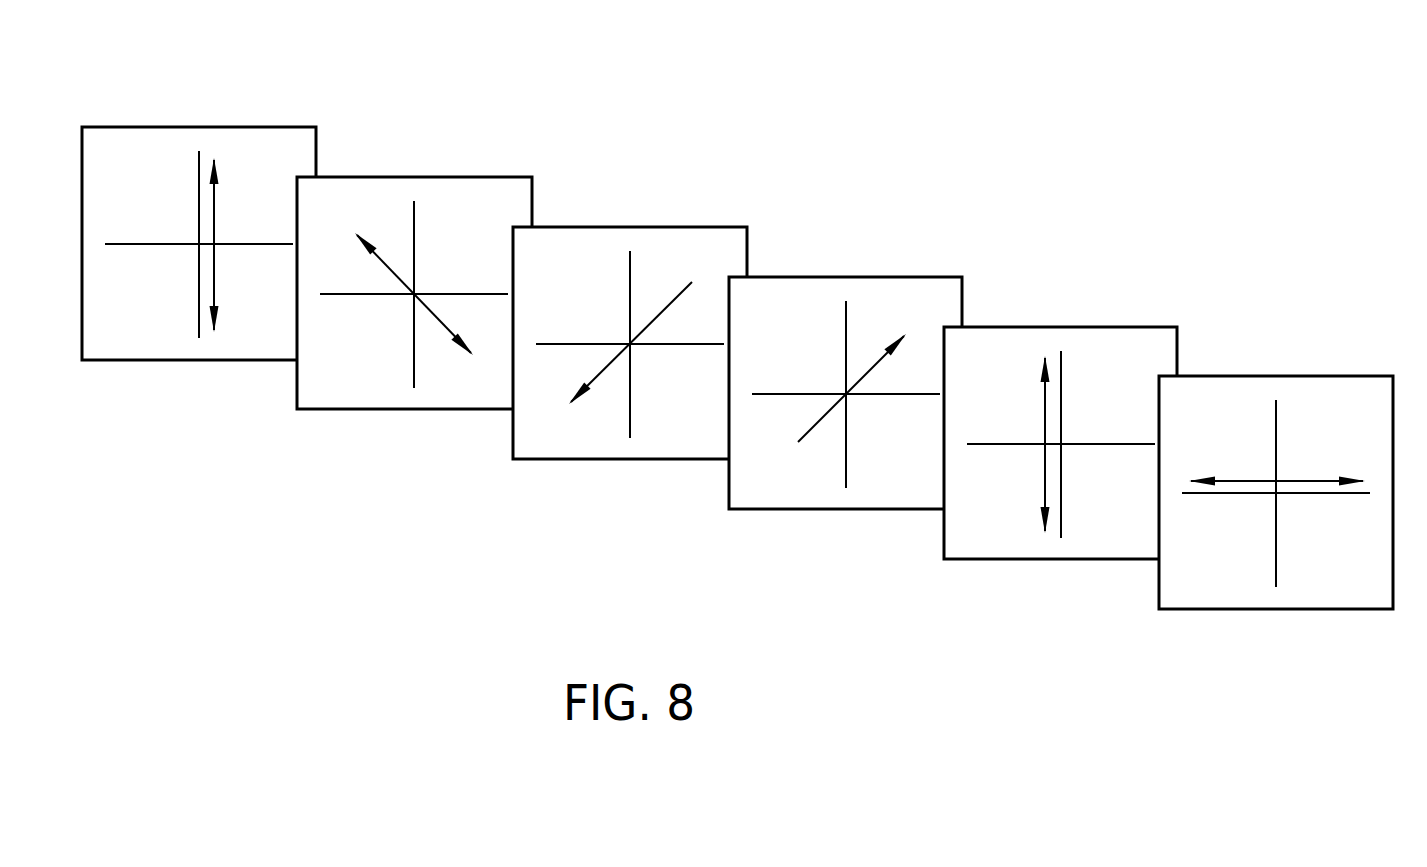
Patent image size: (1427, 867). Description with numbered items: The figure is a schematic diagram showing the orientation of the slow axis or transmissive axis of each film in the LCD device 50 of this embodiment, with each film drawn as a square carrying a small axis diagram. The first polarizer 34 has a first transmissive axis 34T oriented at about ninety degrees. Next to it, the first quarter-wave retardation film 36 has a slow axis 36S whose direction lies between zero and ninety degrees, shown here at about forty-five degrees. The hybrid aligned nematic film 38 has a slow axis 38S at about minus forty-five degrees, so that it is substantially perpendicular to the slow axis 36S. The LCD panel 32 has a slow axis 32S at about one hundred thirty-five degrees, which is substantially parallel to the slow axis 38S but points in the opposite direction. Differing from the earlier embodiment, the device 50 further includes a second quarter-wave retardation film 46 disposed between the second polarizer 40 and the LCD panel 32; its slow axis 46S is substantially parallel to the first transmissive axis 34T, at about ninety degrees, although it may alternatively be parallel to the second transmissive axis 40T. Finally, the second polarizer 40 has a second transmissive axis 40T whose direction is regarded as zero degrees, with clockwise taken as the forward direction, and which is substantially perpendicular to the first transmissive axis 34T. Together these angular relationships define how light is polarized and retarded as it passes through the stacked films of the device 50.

The LCD device 50 is at (747, 316).
The first polarizer 34 is at (210, 219).
The first transmissive axis 34T is at (242, 245).
The first quarter-wave retardation film 36 is at (425, 268).
The slow axis of the first quarter-wave retardation film 36S is at (414, 294).
The hybrid aligned nematic film 38 is at (639, 318).
The slow axis of the hybrid aligned nematic film 38S is at (630, 343).
The LCD panel 32 is at (855, 368).
The slow axis of the LCD panel 32S is at (844, 388).
The second quarter-wave retardation film 46 is at (1071, 418).
The slow axis of the second quarter-wave retardation film 46S is at (1088, 444).
The second polarizer 40 is at (1286, 468).
The second transmissive axis 40T is at (1277, 465).